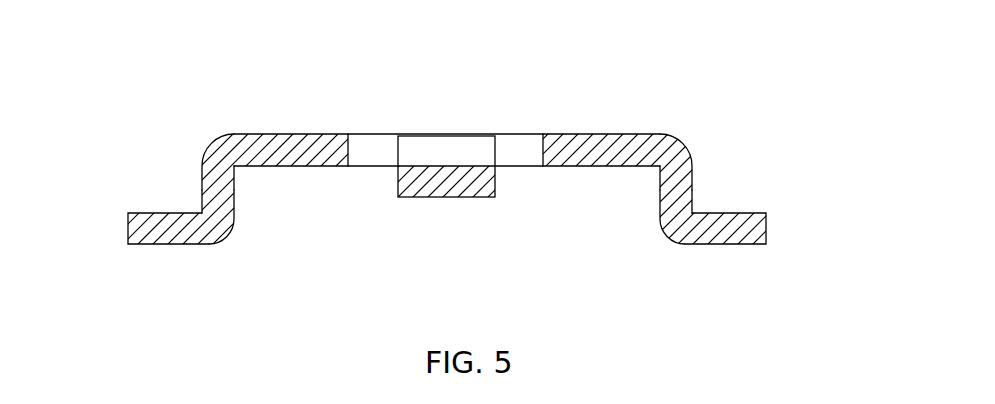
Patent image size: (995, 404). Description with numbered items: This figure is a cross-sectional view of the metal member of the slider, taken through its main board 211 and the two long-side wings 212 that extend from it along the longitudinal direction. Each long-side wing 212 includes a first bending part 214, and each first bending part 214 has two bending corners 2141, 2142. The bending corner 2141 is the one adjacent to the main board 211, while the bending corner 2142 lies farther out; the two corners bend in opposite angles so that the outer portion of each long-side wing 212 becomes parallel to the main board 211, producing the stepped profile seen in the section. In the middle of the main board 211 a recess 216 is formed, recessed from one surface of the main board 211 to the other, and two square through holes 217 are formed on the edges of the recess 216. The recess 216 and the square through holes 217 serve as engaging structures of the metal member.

The main board 211 is at (305, 148).
The long-side wings 212 is at (128, 227).
The first bending part 214 is at (449, 143).
The bending corner 2141 is at (228, 152).
The bending corner 2142 is at (210, 227).
The recess 216 is at (448, 197).
The square through holes 217 is at (376, 152).